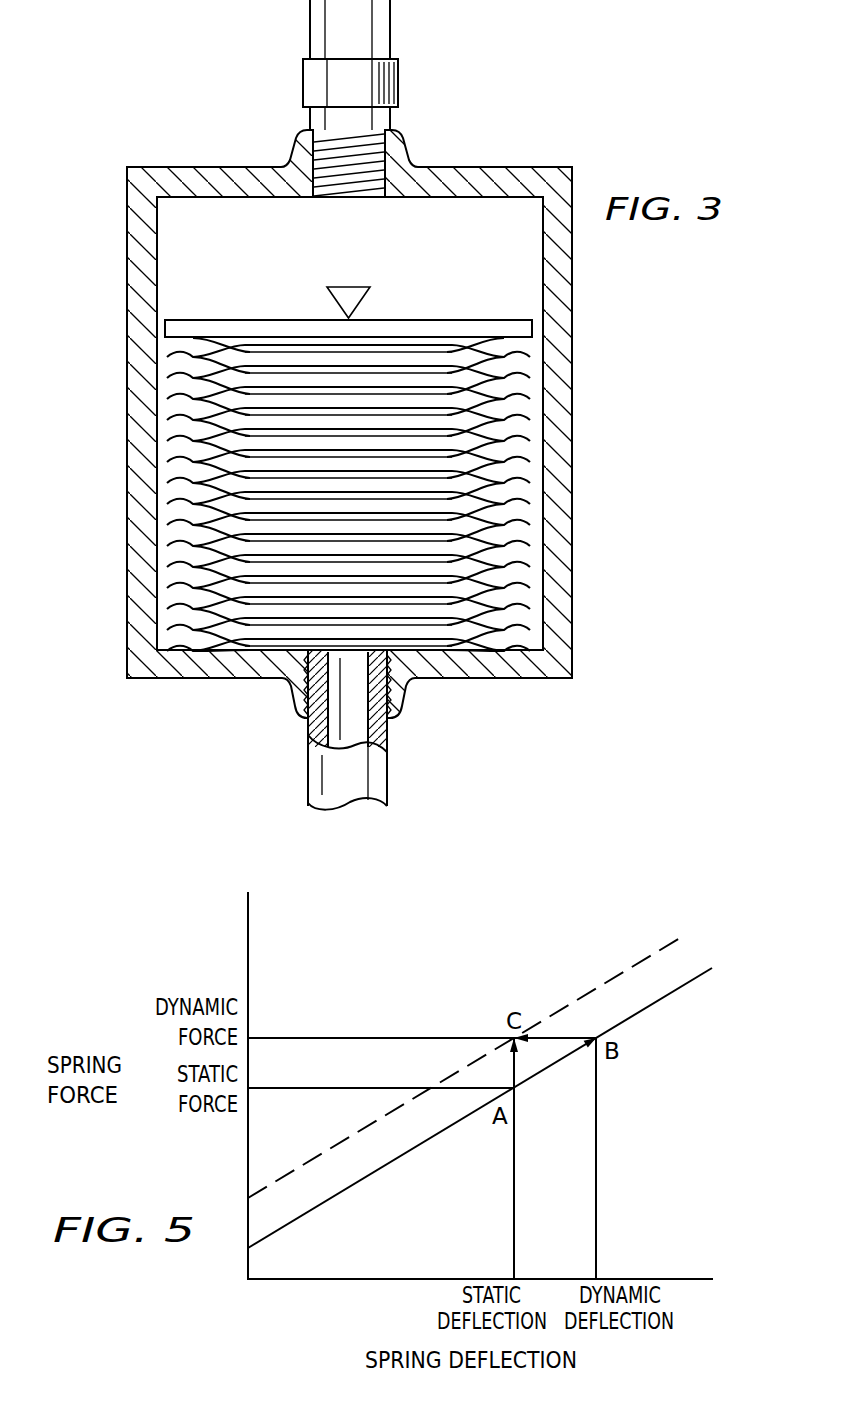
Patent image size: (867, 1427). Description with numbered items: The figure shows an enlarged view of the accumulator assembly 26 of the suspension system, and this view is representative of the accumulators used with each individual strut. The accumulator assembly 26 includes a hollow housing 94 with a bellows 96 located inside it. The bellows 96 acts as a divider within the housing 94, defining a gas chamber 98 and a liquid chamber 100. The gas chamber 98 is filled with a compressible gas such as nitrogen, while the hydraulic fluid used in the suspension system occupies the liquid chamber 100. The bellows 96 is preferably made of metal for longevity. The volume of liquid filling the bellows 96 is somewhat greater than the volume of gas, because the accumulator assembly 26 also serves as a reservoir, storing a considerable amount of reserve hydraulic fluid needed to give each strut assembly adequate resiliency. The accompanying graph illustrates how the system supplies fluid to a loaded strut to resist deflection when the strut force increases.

The accumulator assembly 26 is at (610, 540).
The hollow housing 94 is at (568, 299).
The bellows 96 is at (540, 417).
The gas chamber 98 is at (468, 272).
The liquid chamber 100 is at (368, 487).